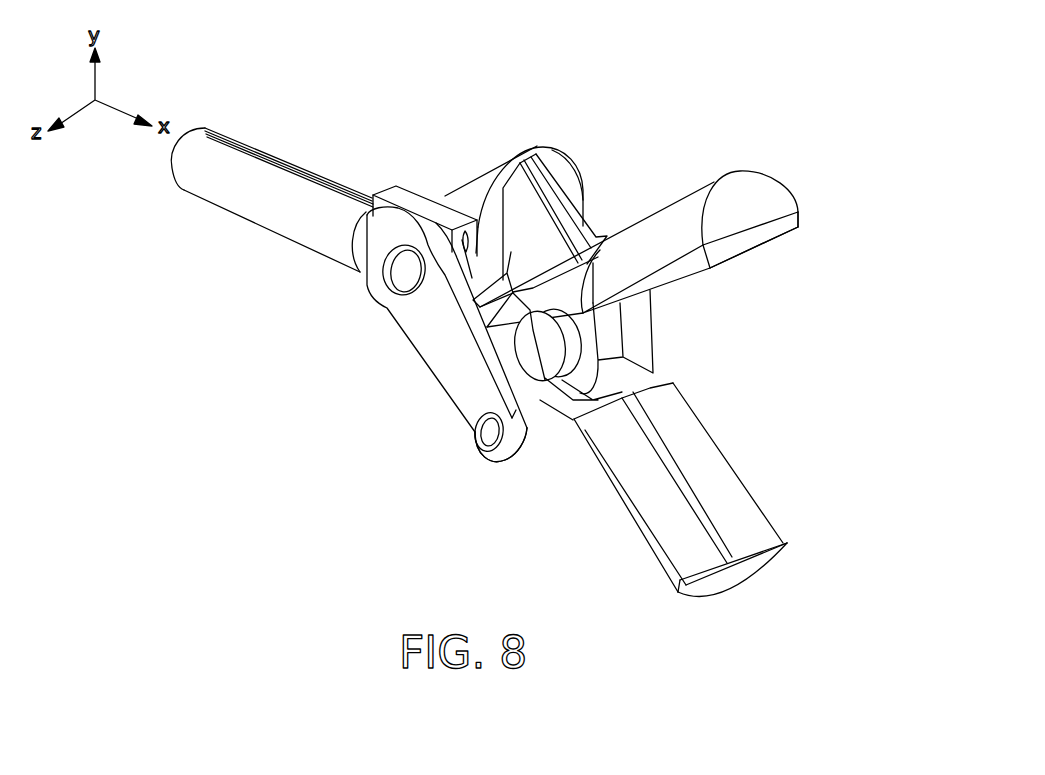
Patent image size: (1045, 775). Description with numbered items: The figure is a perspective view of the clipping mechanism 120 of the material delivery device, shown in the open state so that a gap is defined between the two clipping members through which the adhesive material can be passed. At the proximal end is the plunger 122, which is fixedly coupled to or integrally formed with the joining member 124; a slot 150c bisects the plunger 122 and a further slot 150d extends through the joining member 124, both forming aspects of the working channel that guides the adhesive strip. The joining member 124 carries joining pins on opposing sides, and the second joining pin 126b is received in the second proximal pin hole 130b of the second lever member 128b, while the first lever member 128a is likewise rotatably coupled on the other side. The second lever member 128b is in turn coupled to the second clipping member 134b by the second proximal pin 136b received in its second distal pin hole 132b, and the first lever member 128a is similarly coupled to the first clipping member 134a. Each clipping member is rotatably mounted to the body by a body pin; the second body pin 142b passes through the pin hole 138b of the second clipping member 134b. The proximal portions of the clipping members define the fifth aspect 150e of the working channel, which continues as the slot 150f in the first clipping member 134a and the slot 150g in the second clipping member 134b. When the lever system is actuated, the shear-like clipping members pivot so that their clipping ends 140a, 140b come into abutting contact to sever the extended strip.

The clipping mechanism 120 is at (742, 128).
The plunger 122 is at (300, 188).
The joining member 124 is at (398, 195).
The second joining pin 126b is at (400, 275).
The first lever member 128a is at (477, 197).
The second lever member 128b is at (443, 347).
The second proximal pin hole 130b is at (413, 280).
The second distal pin hole 132b is at (487, 452).
The first clipping member 134a is at (655, 505).
The second clipping member 134b is at (662, 255).
The second proximal pin 136b is at (490, 432).
The pin hole 138b is at (572, 357).
The clipping end 140a is at (752, 550).
The clipping end 140b is at (752, 250).
The second body pin 142b is at (543, 350).
The slot 150c is at (243, 147).
The slot 150d is at (510, 165).
The fifth aspect of the working channel 150e is at (583, 262).
The slot 150f is at (683, 485).
The slot 150g is at (695, 267).